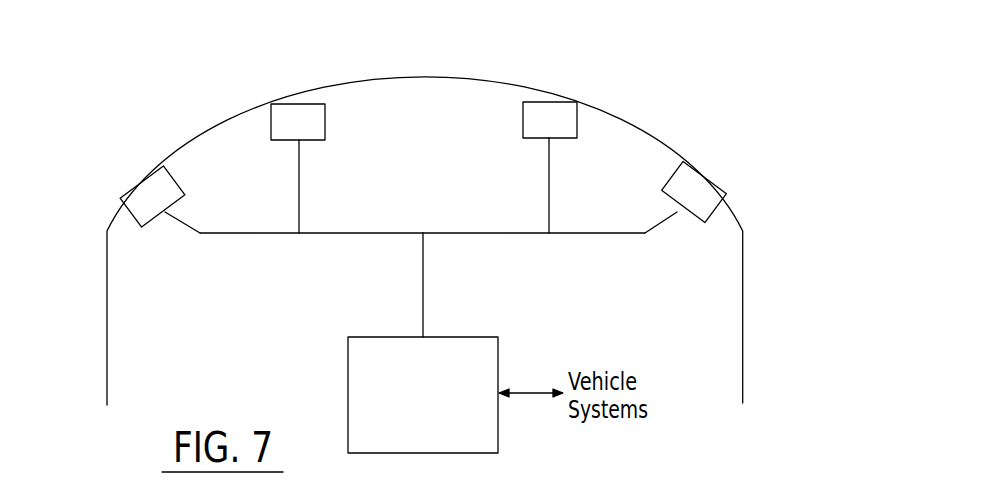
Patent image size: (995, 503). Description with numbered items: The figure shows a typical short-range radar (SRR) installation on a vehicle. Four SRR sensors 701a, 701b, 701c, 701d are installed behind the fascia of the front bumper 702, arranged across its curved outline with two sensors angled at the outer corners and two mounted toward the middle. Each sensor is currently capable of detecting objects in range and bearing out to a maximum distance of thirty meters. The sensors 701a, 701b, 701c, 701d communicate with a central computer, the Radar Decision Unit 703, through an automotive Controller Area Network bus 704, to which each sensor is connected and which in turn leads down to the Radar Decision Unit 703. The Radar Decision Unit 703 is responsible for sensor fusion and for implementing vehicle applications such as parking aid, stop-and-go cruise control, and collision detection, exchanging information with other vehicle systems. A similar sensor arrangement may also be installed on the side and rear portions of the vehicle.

The SRR sensor 701a is at (140, 177).
The SRR sensor 701b is at (298, 103).
The SRR sensor 701c is at (549, 102).
The SRR sensor 701d is at (703, 175).
The front bumper 702 is at (453, 76).
The Radar Decision Unit 703 is at (348, 399).
The CAN bus 704 is at (522, 233).